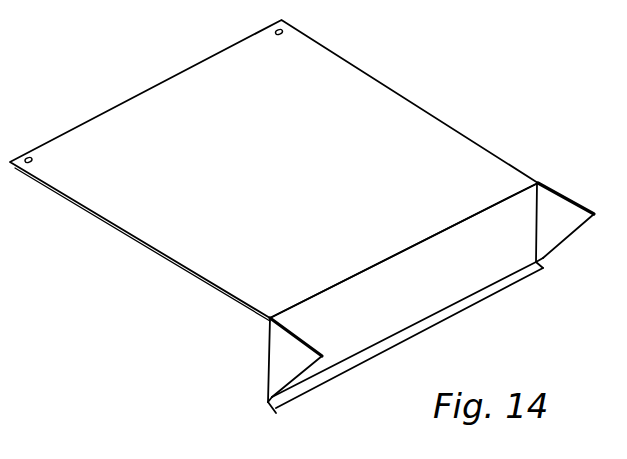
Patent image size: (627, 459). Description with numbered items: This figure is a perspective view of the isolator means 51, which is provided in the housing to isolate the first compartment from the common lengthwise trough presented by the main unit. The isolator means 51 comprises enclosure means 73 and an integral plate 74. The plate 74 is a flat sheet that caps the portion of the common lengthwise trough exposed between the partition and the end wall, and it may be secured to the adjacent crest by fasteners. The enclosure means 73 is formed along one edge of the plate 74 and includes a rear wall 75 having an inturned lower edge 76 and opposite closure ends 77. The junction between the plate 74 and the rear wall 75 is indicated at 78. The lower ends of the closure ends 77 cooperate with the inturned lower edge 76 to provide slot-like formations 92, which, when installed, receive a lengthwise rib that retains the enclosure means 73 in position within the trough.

The isolator means 51 is at (313, 222).
The enclosure means 73 is at (389, 275).
The integral plate 74 is at (201, 87).
The rear wall 75 is at (443, 293).
The inturned lower edge 76 is at (398, 343).
The closure ends 77 is at (293, 365).
The bend line 78 is at (505, 197).
The slot-like formations 92 is at (278, 413).